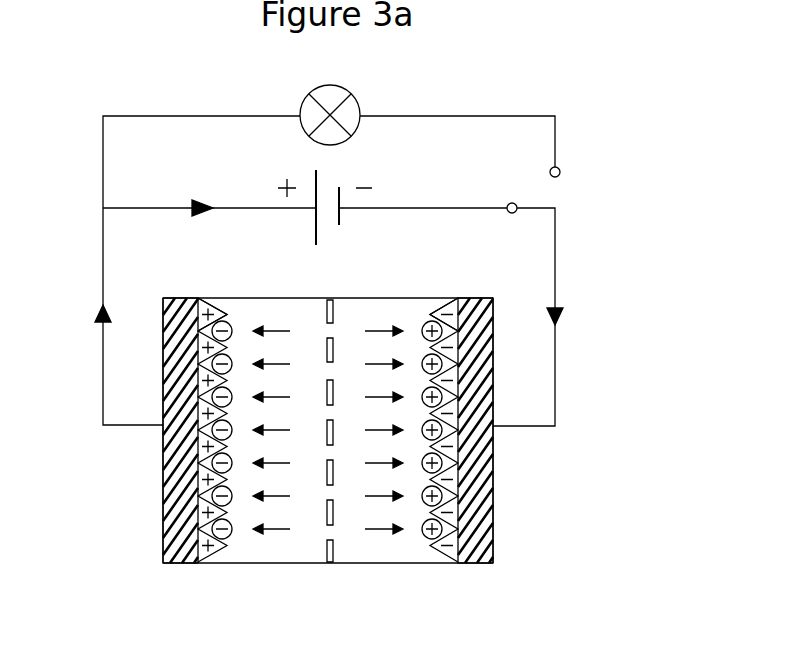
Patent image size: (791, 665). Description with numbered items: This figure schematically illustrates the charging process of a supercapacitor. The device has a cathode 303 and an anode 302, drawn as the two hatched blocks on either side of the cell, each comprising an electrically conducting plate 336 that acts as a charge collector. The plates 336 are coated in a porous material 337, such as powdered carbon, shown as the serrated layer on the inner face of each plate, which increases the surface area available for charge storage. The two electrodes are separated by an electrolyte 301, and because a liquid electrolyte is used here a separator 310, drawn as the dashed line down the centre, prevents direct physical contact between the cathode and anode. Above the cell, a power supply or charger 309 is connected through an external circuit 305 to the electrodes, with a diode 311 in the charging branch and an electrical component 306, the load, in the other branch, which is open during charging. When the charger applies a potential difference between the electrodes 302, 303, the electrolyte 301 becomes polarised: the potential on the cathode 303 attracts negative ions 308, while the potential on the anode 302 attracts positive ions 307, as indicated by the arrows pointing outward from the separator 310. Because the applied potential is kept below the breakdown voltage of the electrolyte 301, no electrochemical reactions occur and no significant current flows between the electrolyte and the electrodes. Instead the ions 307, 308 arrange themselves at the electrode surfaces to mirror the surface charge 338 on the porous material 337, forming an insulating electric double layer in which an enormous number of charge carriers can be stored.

The electrolyte 301 is at (277, 550).
The anode 302 is at (508, 575).
The cathode 303 is at (137, 583).
The electrical connection 305 is at (472, 115).
The electrical component 306 is at (302, 113).
The positive ions 307 is at (437, 537).
The negative ions 308 is at (220, 530).
The voltage source (battery) 309 is at (350, 225).
The separator 310 is at (332, 555).
The diode 311 is at (202, 202).
The electrically conducting plate 336 is at (168, 515).
The porous material 337 is at (208, 303).
The surface charge 338 is at (205, 478).